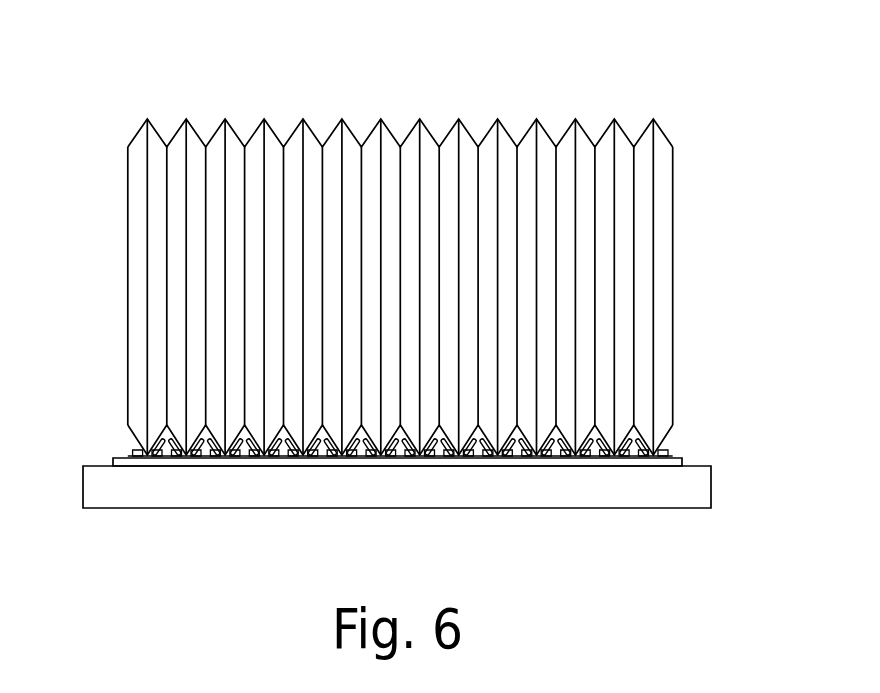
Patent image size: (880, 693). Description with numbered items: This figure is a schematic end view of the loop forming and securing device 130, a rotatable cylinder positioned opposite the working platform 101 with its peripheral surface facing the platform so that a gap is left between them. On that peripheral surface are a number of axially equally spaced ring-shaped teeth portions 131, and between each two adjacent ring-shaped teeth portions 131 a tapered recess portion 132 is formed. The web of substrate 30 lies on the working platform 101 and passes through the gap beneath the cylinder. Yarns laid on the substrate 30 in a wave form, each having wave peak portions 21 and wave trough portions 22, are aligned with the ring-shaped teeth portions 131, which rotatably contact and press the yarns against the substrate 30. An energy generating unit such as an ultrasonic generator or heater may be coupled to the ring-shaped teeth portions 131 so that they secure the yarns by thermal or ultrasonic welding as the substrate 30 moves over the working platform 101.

The loop forming and securing device 130 is at (431, 252).
The ring-shaped teeth portions 131 is at (148, 120).
The tapered recess portion 132 is at (137, 132).
The wave peak portions 21 is at (660, 444).
The wave trough portions 22 is at (638, 458).
The substrate 30 is at (113, 458).
The working platform 101 is at (708, 487).